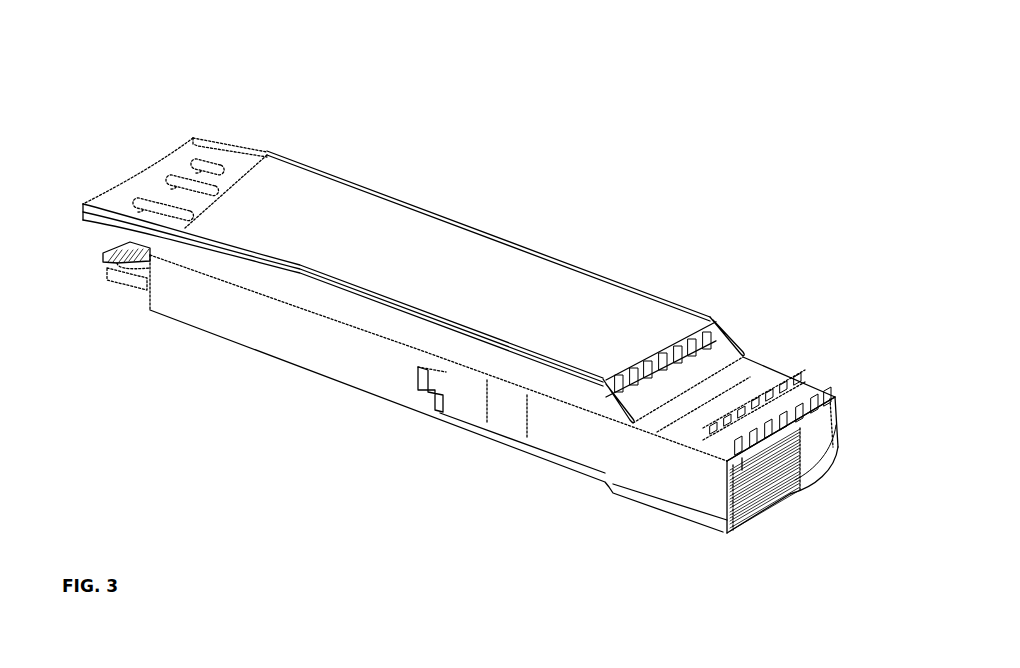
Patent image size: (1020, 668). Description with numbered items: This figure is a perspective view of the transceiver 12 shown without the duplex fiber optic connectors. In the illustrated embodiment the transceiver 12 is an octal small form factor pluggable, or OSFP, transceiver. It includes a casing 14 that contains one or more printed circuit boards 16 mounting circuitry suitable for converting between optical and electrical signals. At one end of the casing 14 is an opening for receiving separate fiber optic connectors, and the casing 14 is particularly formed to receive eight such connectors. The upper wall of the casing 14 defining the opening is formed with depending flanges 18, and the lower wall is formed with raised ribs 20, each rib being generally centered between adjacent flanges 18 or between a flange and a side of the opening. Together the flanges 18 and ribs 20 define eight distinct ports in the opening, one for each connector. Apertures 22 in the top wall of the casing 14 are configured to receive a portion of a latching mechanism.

The transceiver 12 is at (474, 330).
The casing 14 is at (317, 372).
The printed circuit boards 16 is at (150, 283).
The depending flanges 18 is at (773, 430).
The raised ribs 20 is at (841, 450).
The apertures 22 is at (770, 393).